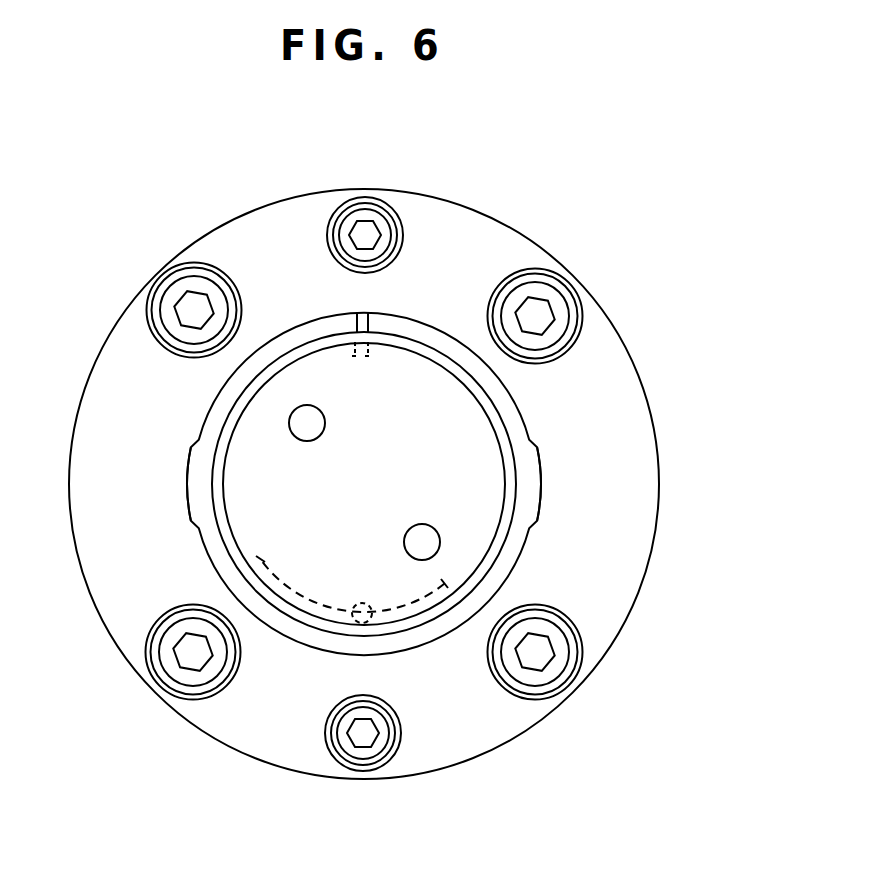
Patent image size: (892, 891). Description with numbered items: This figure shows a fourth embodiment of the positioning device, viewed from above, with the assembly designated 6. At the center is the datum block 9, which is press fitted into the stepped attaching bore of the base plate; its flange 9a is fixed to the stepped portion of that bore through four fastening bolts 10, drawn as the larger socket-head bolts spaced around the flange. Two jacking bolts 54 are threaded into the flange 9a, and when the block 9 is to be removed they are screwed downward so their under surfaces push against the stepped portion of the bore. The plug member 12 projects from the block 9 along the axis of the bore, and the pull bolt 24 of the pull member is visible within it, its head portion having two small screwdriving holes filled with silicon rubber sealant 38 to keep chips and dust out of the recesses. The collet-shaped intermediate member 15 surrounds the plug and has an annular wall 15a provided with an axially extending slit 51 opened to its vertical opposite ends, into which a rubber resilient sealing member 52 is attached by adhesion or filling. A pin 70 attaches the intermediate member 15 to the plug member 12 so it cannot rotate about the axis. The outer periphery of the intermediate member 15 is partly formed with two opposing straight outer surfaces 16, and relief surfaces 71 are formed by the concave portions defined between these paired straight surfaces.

The clamp unit 6 is at (675, 387).
The datum block 9 is at (653, 552).
The flange 9a is at (622, 597).
The fastening bolt 10 is at (168, 295).
The plug member 12 is at (308, 605).
The intermediate member 15 is at (543, 465).
The annular wall 15a is at (213, 415).
The straight outer surface 16 is at (185, 493).
The pull bolt 24 is at (428, 350).
The sealant 38 is at (303, 437).
The slit 51 is at (362, 317).
The resilient sealing member 52 is at (355, 318).
The jacking bolt 54 is at (377, 217).
The pin 70 is at (362, 603).
The relief surface 71 is at (520, 405).